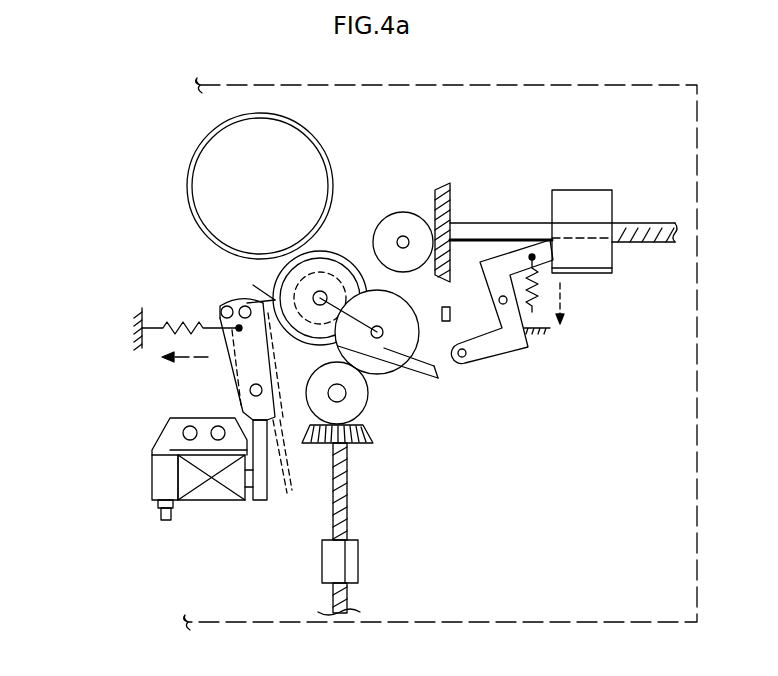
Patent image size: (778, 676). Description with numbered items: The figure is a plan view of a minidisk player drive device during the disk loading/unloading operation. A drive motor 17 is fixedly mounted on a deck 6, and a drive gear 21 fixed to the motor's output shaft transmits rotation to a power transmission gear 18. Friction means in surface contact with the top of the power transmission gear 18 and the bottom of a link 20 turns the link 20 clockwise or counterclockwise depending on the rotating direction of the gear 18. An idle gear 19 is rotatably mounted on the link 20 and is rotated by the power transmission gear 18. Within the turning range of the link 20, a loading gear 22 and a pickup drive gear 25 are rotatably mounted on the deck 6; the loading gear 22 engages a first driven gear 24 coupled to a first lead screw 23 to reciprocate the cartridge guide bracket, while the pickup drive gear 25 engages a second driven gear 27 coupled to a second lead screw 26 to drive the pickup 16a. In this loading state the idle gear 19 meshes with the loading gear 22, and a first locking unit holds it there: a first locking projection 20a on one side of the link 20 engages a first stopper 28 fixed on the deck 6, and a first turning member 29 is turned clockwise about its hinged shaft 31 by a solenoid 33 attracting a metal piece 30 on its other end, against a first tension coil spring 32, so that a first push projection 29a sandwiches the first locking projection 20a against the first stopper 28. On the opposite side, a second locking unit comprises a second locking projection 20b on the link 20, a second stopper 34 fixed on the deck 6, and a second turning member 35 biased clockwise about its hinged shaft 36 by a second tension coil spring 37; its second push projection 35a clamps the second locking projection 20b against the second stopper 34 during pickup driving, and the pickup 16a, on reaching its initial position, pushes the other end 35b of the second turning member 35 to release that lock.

The deck 6 is at (697, 145).
The pickup 16a is at (595, 190).
The drive motor 17 is at (193, 150).
The power transmission gear 18 is at (327, 252).
The idle gear 19 is at (372, 378).
The link 20 is at (385, 370).
The first locking projection 20a is at (247, 303).
The second locking projection 20b is at (395, 362).
The drive gear 21 is at (200, 185).
The loading gear 22 is at (358, 402).
The first lead screw 23 is at (347, 515).
The first driven gear 24 is at (366, 432).
The pickup drive gear 25 is at (395, 223).
The second lead screw 26 is at (503, 296).
The second driven gear 27 is at (437, 183).
The first stopper 28 is at (253, 285).
The first turning member 29 is at (230, 373).
The first push projection 29a is at (227, 305).
The metal piece 30 is at (258, 500).
The hinged shaft 31 is at (250, 391).
The first tension coil spring 32 is at (142, 348).
The solenoid 33 is at (152, 470).
The second stopper 34 is at (448, 306).
The second turning member 35 is at (528, 348).
The second push projection 35a is at (468, 358).
The other end of second turning member 35b is at (590, 265).
The hinged shaft 36 is at (533, 254).
The second tension coil spring 37 is at (535, 312).